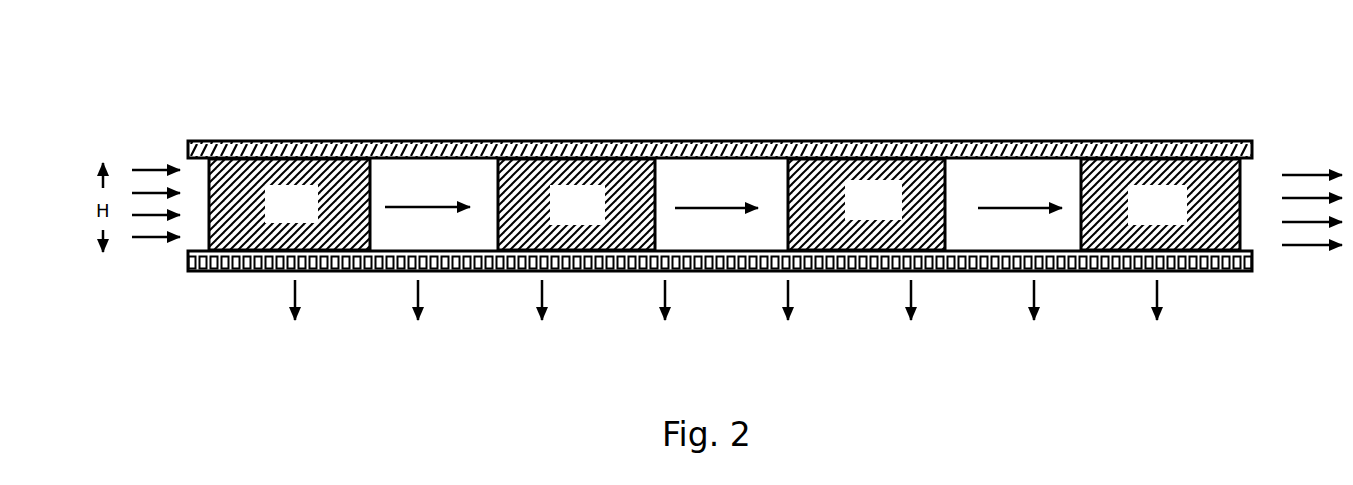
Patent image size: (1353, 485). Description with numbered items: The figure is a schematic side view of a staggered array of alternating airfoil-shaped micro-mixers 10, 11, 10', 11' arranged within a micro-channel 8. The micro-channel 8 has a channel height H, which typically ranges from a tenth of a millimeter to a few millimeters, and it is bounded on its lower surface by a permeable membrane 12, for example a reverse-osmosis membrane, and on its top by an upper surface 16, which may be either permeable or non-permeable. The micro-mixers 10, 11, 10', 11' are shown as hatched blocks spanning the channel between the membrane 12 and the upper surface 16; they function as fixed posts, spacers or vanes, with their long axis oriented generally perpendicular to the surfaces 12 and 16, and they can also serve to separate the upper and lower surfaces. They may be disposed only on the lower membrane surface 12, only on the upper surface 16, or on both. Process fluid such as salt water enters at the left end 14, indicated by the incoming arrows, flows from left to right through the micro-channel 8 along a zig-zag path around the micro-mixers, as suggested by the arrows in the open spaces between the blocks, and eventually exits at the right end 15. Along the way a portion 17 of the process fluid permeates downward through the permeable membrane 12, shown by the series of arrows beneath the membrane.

The micro-channel 8 is at (430, 173).
The micro-mixer 10 is at (289, 204).
The micro-mixer 11 is at (576, 204).
The micro-mixer 10' is at (866, 204).
The micro-mixer 11' is at (1160, 204).
The permeable membrane 12 is at (962, 275).
The left end 14 is at (156, 222).
The right end 15 is at (1312, 226).
The upper surface 16 is at (717, 130).
The permeating portion of process fluid 17 is at (726, 308).